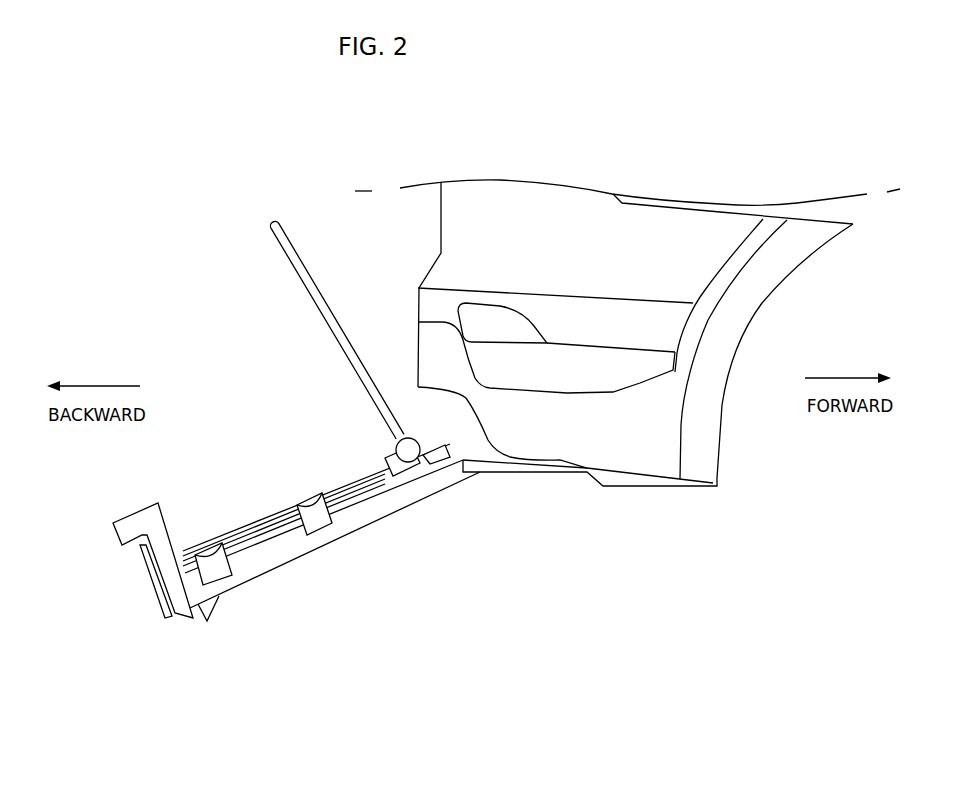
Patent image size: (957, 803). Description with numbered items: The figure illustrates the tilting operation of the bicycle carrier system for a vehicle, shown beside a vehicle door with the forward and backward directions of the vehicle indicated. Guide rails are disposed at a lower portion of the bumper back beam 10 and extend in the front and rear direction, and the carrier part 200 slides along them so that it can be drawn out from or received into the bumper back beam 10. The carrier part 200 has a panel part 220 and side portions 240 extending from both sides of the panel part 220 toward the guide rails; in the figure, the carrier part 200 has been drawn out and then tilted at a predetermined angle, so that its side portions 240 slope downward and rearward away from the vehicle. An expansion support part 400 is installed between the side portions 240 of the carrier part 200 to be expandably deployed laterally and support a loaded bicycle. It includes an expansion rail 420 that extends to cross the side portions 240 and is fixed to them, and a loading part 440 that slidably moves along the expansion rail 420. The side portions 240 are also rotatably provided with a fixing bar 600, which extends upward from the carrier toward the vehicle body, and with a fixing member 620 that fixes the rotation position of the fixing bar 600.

The bumper back beam 10 is at (607, 432).
The carrier part 200 is at (270, 578).
The panel part 220 is at (172, 572).
The side portions 240 is at (343, 523).
The expansion support part 400 is at (274, 479).
The expansion rail 420 is at (243, 540).
The loading part 440 is at (333, 495).
The fixing bar 600 is at (308, 277).
The fixing member 620 is at (409, 452).